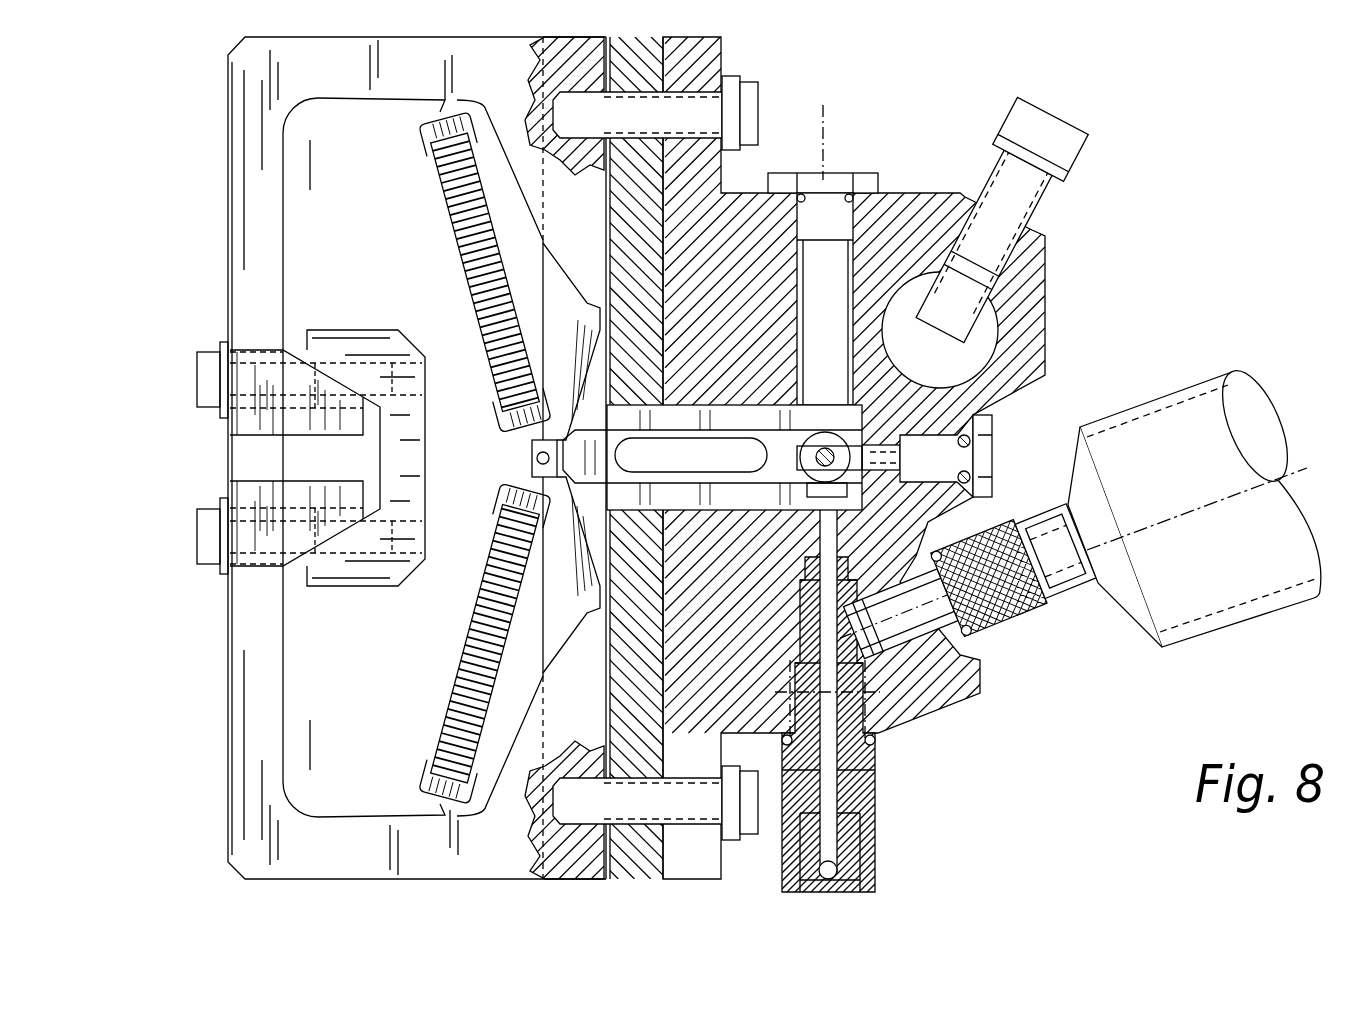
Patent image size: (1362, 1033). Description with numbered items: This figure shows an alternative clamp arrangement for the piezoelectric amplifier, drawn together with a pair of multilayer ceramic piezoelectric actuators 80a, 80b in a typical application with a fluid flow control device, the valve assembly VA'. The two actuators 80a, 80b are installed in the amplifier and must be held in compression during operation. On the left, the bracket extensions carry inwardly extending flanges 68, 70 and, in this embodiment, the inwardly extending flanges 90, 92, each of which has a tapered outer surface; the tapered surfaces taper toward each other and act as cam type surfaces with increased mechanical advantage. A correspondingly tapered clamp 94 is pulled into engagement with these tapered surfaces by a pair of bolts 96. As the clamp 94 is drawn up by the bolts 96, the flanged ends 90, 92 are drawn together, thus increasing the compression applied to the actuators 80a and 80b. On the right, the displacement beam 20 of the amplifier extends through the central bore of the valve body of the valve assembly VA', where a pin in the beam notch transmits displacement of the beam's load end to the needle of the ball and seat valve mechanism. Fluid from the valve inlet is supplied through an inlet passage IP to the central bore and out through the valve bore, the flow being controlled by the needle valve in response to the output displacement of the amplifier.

The inwardly extending flange 68 is at (280, 170).
The inwardly extending flange 70 is at (283, 673).
The multilayer ceramic piezoelectric actuator 80a is at (448, 238).
The multilayer ceramic piezoelectric actuator 80b is at (468, 629).
The inwardly extending flange 90 is at (375, 500).
The inwardly extending flange 92 is at (288, 333).
The tapered clamp 94 is at (416, 335).
The bolts 96 is at (214, 392).
The displacement beam 20 is at (703, 483).
The inlet passage IP is at (921, 625).
The valve assembly VA' is at (923, 464).